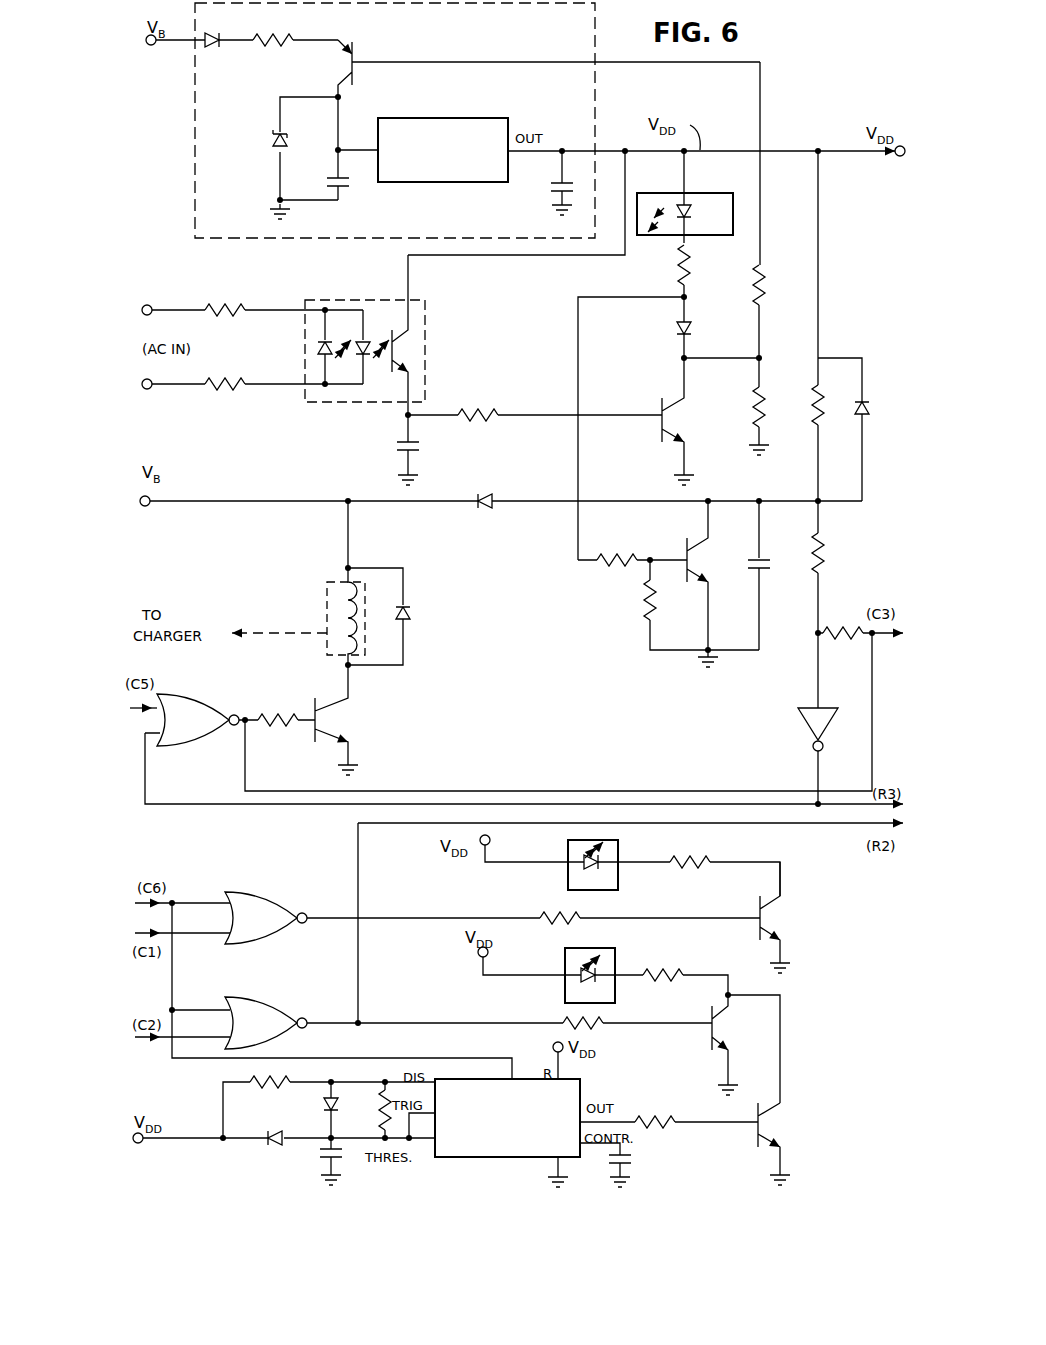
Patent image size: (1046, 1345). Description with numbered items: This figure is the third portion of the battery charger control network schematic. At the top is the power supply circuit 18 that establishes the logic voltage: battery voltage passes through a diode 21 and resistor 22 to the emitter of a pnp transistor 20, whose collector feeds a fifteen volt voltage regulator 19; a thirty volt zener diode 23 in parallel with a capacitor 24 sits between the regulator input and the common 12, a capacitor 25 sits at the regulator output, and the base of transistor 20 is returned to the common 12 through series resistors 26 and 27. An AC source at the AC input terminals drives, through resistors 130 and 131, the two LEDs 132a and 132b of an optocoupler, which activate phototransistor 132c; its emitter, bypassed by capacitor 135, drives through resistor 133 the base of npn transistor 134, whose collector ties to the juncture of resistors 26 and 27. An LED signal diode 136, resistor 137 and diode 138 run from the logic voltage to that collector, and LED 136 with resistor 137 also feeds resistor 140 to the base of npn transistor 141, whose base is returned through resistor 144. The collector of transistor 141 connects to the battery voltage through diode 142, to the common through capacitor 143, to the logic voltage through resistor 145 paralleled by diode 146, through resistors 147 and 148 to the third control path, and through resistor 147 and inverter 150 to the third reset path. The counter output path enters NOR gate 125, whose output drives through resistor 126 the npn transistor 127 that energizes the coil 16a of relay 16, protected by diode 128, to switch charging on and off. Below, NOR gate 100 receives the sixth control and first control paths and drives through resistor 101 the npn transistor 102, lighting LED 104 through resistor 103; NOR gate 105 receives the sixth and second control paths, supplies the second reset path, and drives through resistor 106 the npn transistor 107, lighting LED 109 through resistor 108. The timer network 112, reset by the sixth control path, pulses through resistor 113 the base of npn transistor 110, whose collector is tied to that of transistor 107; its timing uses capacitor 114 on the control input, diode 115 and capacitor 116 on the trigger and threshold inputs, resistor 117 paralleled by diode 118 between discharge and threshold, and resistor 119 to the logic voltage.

The common 12 is at (286, 212).
The relay 16 is at (317, 623).
The relay coil 16a is at (327, 600).
The power supply circuit 18 is at (196, 126).
The voltage regulator 19 is at (442, 182).
The pnp transistor 20 is at (352, 79).
The diode 21 is at (212, 50).
The resistor 22 is at (257, 38).
The zener diode 23 is at (272, 147).
The capacitor 24 is at (349, 188).
The capacitor 25 is at (555, 185).
The resistor 26 is at (764, 268).
The resistor 27 is at (763, 396).
The NOR gate 100 is at (266, 918).
The resistor 101 is at (558, 914).
The npn transistor 102 is at (756, 908).
The resistor 103 is at (679, 858).
The LED 104 is at (568, 880).
The NOR gate 105 is at (266, 1023).
The resistor 106 is at (552, 1018).
The npn transistor 107 is at (726, 1022).
The resistor 108 is at (646, 970).
The LED 109 is at (608, 994).
The npn transistor 110 is at (781, 1117).
The second Timer Network 112 is at (507, 1118).
The resistor 113 is at (670, 1125).
The capacitor 114 is at (632, 1159).
The diode 115 is at (268, 1138).
The capacitor 116 is at (317, 1158).
The resistor 117 is at (380, 1114).
The diode 118 is at (326, 1107).
The resistor 119 is at (248, 1082).
The NOR gate 125 is at (198, 720).
The resistor 126 is at (292, 714).
The npn transistor 127 is at (338, 718).
The protection diode 128 is at (410, 610).
The resistor 130 is at (214, 308).
The resistor 131 is at (210, 395).
The LED 132a is at (318, 350).
The LED 132b is at (366, 310).
The phototransistor 132c is at (395, 344).
The resistor 133 is at (472, 410).
The npn transistor 134 is at (683, 409).
The capacitor 135 is at (422, 444).
The LED signal diode 136 is at (678, 193).
The resistor 137 is at (689, 258).
The diode 138 is at (691, 329).
The resistor 140 is at (636, 556).
The npn transistor 141 is at (678, 542).
The diode 142 is at (492, 498).
The capacitor 143 is at (756, 555).
The resistor 144 is at (642, 588).
The resistor 145 is at (824, 412).
The diode 146 is at (870, 408).
The resistor 147 is at (818, 536).
The resistor 148 is at (844, 636).
The inverter 150 is at (804, 718).